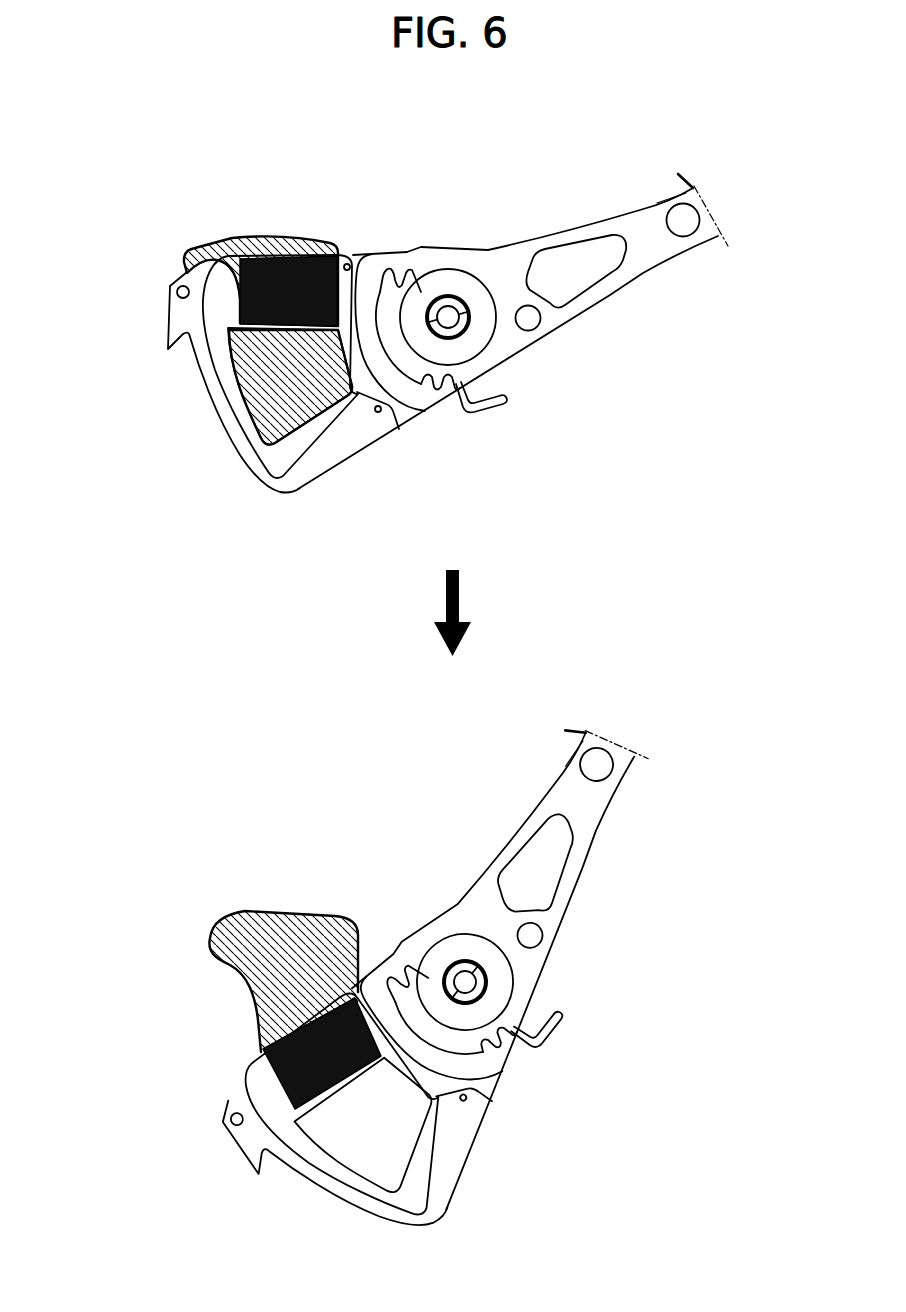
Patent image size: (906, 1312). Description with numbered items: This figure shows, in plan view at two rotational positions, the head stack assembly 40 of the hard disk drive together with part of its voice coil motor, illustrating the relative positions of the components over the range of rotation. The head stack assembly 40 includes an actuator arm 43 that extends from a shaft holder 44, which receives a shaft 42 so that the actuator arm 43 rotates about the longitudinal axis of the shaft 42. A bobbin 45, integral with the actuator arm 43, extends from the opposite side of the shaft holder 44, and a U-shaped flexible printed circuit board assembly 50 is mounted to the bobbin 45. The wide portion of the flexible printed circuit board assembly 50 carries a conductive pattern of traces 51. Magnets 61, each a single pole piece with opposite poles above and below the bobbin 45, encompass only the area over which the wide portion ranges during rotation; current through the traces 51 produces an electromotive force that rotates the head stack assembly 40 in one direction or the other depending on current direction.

The head stack assembly 40 is at (423, 232).
The shaft 42 is at (455, 313).
The actuator arm 43 is at (610, 293).
The shaft holder 44 is at (420, 374).
The bobbin 45 is at (357, 443).
The flexible printed circuit board assembly 50 is at (205, 397).
The conductive pattern of traces 51 is at (268, 245).
The magnets 61 is at (188, 255).